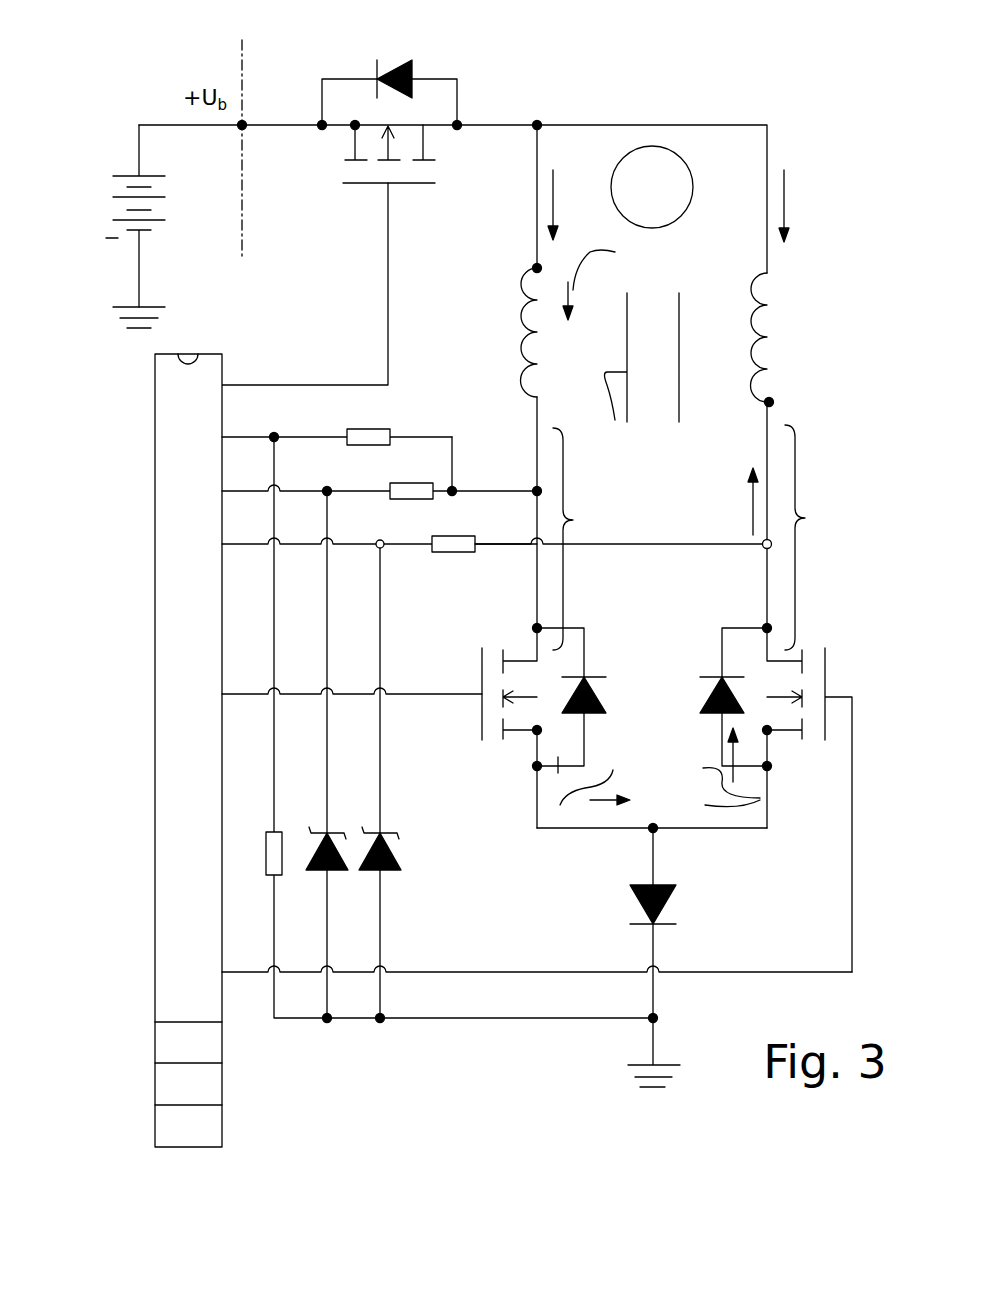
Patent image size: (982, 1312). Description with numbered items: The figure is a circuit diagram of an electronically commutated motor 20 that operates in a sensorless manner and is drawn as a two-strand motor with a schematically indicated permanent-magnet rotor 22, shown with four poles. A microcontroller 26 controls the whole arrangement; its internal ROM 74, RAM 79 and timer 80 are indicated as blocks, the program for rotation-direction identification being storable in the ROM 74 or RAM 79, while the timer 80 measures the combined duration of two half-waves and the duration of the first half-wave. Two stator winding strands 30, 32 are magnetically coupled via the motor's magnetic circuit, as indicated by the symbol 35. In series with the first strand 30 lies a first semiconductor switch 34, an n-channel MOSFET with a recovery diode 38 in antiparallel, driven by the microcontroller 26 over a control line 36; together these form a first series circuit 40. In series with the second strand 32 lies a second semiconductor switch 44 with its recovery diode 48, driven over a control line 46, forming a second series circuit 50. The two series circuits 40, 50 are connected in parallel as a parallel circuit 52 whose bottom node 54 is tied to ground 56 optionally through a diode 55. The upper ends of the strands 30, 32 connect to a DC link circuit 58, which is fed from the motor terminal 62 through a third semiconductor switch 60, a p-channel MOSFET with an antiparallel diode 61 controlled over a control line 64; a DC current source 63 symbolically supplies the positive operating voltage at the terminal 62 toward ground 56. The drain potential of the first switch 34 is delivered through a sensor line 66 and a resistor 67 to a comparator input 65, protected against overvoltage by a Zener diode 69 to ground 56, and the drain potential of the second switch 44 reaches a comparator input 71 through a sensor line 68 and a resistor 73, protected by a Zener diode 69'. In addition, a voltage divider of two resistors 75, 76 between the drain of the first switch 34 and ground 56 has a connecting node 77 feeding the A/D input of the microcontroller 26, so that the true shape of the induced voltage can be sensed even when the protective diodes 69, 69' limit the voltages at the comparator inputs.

The electronically commutated motor 20 is at (673, 50).
The permanent-magnet rotor 22 is at (672, 210).
The microcontroller 26 is at (177, 847).
The first stator winding strand 30 is at (530, 272).
The second stator winding strand 32 is at (780, 297).
The first semiconductor switch 34 is at (478, 652).
The magnetic coupling symbol 35 is at (679, 372).
The control line 36 is at (430, 694).
The recovery diode 38 is at (603, 693).
The first series circuit 40 is at (588, 539).
The second controllable semiconductor switch 44 is at (832, 668).
The control line 46 is at (485, 972).
The recovery diode 48 is at (707, 698).
The second series circuit 50 is at (786, 537).
The parallel circuit 52 is at (670, 595).
The bottom node 54 is at (535, 490).
The diode 55 is at (636, 910).
The ground 56 is at (139, 265).
The DC link circuit 58 is at (510, 125).
The third semiconductor switch 60 is at (366, 185).
The diode 61 is at (384, 60).
The motor terminal 62 is at (243, 125).
The DC current source 63 is at (134, 175).
The control line 64 is at (388, 312).
The comparator input 65 is at (222, 491).
The sensor line 66 is at (453, 470).
The resistor 67 is at (398, 499).
The sensor line 68 is at (510, 544).
The Zener diode 69 is at (339, 925).
The Zener diode 69' is at (395, 925).
The comparator input 71 is at (222, 545).
The resistor 73 is at (455, 552).
The ROM 74 is at (222, 1045).
The resistor 75 is at (365, 430).
The resistor 76 is at (283, 848).
The connecting node 77 is at (275, 440).
The RAM 79 is at (222, 1087).
The timer 80 is at (222, 1127).